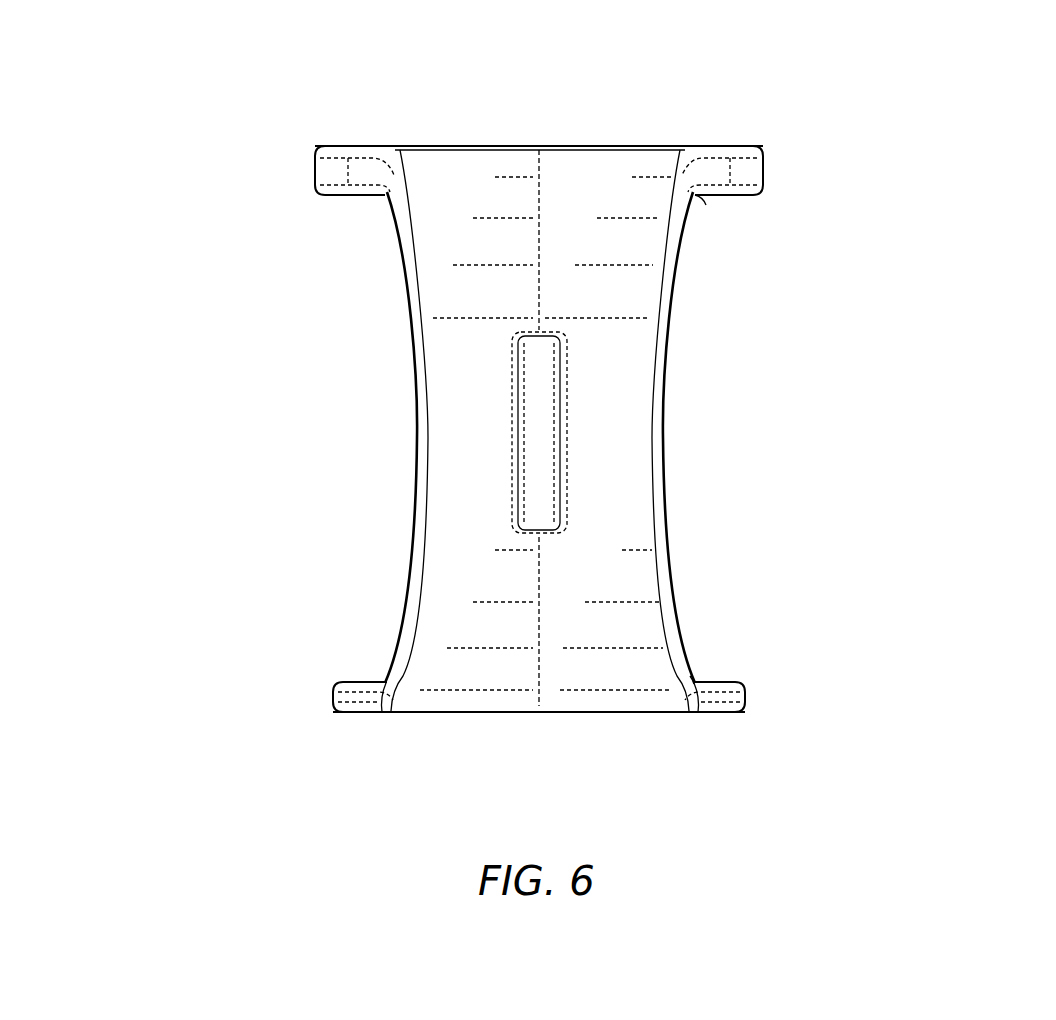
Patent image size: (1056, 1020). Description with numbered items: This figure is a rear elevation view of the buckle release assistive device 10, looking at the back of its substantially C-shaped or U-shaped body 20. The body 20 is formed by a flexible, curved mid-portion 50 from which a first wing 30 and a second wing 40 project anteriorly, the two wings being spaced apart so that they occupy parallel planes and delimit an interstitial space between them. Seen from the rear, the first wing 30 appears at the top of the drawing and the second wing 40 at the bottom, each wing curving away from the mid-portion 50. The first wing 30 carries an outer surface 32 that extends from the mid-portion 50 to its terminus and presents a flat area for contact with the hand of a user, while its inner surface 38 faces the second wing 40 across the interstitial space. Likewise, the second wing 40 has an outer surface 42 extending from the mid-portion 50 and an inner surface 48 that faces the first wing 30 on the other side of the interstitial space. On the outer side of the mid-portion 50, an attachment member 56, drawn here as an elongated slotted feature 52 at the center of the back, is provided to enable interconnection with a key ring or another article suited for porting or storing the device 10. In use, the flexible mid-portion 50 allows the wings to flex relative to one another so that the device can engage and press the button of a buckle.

The buckle release assistive device 10 is at (955, 86).
The body 20 is at (281, 321).
The first wing 30 is at (740, 168).
The outer surface 32 is at (680, 146).
The inner surface 38 is at (696, 196).
The second wing 40 is at (730, 694).
The outer surface 42 is at (675, 713).
The inner surface 48 is at (695, 682).
The mid-portion 50 is at (615, 470).
The slot 52 is at (563, 432).
The attachment member 56 is at (537, 436).